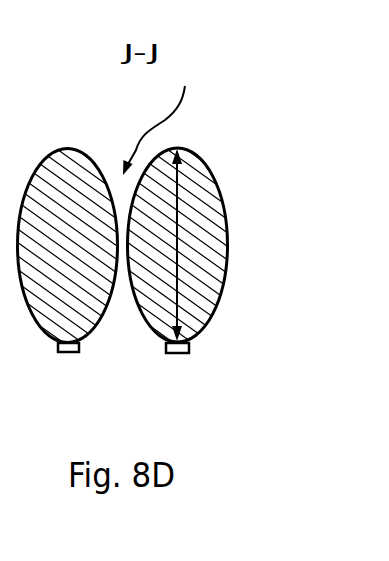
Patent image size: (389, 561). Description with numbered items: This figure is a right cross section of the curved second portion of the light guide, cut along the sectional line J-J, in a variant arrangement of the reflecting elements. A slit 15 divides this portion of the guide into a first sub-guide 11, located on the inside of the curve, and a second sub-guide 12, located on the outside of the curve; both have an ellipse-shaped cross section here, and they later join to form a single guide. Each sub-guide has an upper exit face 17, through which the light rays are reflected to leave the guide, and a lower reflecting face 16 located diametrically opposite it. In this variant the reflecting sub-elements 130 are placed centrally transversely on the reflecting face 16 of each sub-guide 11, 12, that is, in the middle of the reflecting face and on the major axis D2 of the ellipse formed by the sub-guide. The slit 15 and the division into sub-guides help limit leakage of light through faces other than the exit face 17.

The first sub-guide 11 is at (203, 197).
The second sub-guide 12 is at (50, 177).
The slit 15 is at (160, 116).
The reflecting face 16 is at (157, 336).
The exit face 17 is at (145, 223).
The reflecting sub-elements 130 is at (68, 354).
The major axis D2 is at (179, 250).